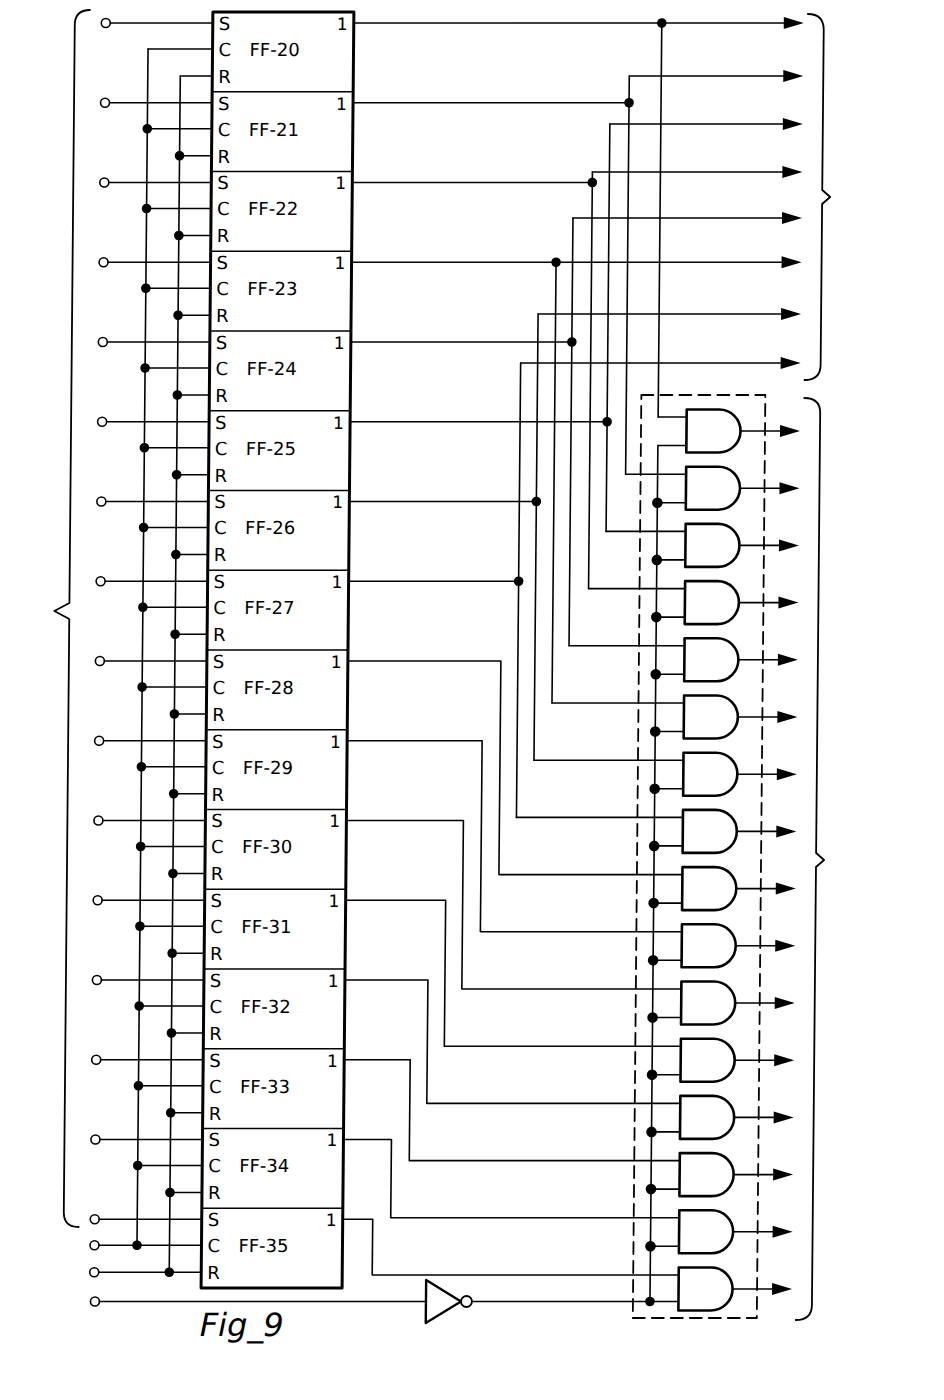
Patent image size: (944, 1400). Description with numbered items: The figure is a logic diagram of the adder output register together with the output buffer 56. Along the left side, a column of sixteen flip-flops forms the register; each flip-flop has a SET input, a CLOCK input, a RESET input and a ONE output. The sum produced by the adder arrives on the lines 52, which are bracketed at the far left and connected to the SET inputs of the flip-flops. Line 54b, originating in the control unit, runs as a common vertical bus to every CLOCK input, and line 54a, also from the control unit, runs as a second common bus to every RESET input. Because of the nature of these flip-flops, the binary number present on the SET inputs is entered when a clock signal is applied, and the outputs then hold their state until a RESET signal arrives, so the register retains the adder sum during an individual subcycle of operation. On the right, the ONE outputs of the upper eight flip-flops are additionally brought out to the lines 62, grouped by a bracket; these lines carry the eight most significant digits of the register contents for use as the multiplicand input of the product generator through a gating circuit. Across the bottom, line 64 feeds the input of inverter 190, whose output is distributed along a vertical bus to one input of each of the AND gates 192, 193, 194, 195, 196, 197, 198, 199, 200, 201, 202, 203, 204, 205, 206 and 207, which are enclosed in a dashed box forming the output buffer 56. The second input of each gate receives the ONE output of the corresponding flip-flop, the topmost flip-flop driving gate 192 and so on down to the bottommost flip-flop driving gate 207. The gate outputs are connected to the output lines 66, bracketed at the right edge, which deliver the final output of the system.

The lines 52 is at (55, 618).
The line 54a is at (103, 1271).
The line 54b is at (103, 1244).
The output buffer 56 is at (648, 1318).
The lines 62 is at (832, 197).
The line 64 is at (113, 1315).
The output lines 66 is at (827, 859).
The inverter 190 is at (438, 1322).
The AND gate 192 is at (723, 441).
The AND gate 193 is at (723, 498).
The AND gate 194 is at (723, 555).
The AND gate 195 is at (723, 613).
The AND gate 196 is at (723, 670).
The AND gate 197 is at (723, 727).
The AND gate 198 is at (723, 784).
The AND gate 199 is at (723, 841).
The AND gate 200 is at (723, 899).
The AND gate 201 is at (723, 956).
The AND gate 202 is at (723, 1013).
The AND gate 203 is at (723, 1070).
The AND gate 204 is at (723, 1127).
The AND gate 205 is at (723, 1185).
The AND gate 206 is at (723, 1242).
The AND gate 207 is at (723, 1299).